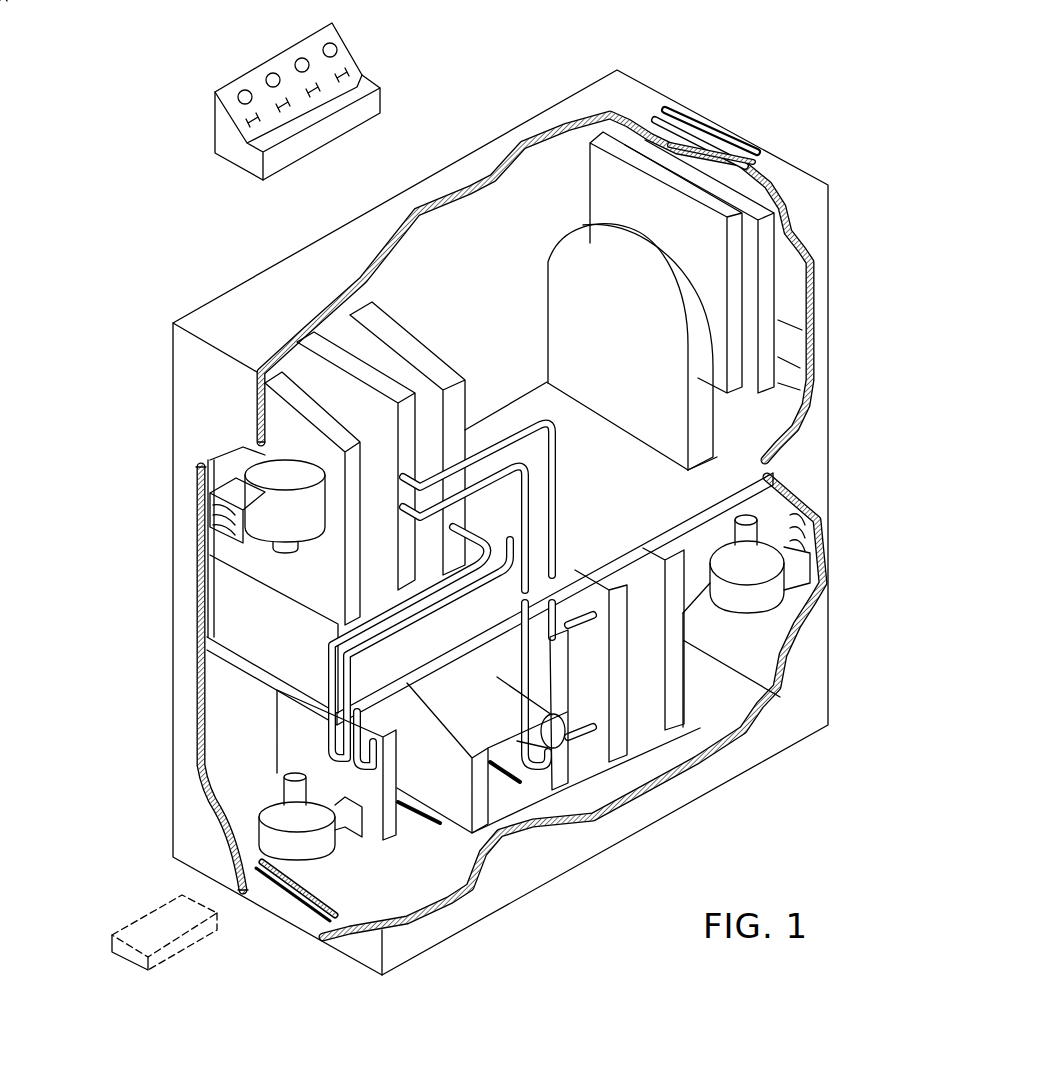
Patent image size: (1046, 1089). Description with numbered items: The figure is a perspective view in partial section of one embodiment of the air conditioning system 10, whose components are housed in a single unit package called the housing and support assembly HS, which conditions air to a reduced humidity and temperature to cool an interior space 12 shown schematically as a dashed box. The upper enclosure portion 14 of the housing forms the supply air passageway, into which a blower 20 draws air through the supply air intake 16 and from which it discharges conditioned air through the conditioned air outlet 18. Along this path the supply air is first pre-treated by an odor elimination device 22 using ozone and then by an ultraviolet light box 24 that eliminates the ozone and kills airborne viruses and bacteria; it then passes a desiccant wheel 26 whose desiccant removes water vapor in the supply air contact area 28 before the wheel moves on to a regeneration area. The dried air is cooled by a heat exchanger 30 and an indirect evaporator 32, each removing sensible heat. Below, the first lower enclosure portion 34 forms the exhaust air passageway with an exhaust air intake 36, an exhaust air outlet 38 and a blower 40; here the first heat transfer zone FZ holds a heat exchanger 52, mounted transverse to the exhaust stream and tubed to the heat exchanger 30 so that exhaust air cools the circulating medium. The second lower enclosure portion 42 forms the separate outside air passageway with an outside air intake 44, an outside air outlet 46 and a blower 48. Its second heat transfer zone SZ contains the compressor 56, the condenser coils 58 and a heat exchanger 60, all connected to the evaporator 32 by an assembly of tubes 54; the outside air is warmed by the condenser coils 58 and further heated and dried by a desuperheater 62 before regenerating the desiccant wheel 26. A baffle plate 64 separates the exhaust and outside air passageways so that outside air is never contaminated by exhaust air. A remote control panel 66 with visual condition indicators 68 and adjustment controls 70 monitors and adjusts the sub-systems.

The air conditioning system 10 is at (205, 268).
The interior space 12 is at (120, 903).
The upper enclosure portion 14 is at (187, 387).
The supply air intake 16 is at (712, 122).
The conditioned air outlet 18 is at (207, 523).
The blower 20 is at (205, 468).
The odor elimination device 22 is at (750, 202).
The ultraviolet light box 24 is at (598, 162).
The desiccant wheel 26 is at (570, 285).
The supply air contact area 28 is at (585, 212).
The heat exchanger 30 is at (407, 360).
The indirect evaporator 32 is at (345, 365).
The first lower enclosure portion 34 is at (180, 610).
The exhaust air intake 36 is at (287, 907).
The exhaust air outlet 38 is at (475, 823).
The blower 40 is at (232, 835).
The second lower enclosure portion 42 is at (727, 713).
The outside air intake 44 is at (520, 782).
The outside air outlet 46 is at (800, 553).
The blower 48 is at (773, 593).
The heat exchanger 52 is at (380, 828).
The assembly of tubes 54 is at (550, 510).
The compressor 56 is at (503, 707).
The condenser coils 58 is at (600, 768).
The heat exchanger 60 is at (623, 757).
The desuperheater 62 is at (683, 727).
The baffle plate 64 is at (440, 823).
The remote control panel 66 is at (375, 42).
The visual condition indicators 68 is at (240, 90).
The adjustment controls 70 is at (375, 100).
The housing and support assembly HS is at (160, 373).
The first heat transfer zone FZ is at (262, 758).
The second heat transfer zone SZ is at (630, 647).